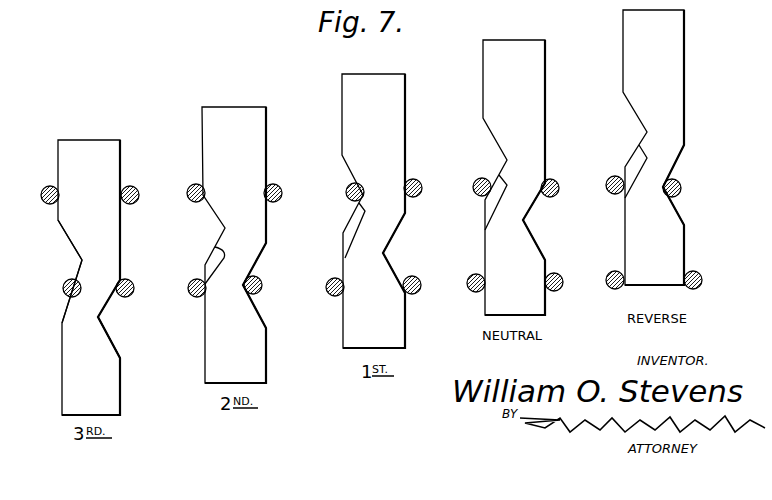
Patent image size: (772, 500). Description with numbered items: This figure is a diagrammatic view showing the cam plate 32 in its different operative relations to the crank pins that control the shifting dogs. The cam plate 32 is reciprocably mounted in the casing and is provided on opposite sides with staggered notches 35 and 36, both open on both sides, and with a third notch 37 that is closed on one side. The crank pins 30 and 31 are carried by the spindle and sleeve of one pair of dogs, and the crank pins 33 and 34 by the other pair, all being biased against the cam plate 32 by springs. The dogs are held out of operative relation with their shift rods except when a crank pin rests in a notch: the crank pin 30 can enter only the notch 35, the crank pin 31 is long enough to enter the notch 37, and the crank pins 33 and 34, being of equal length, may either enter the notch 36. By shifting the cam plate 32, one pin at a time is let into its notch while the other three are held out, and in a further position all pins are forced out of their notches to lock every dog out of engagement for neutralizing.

The crank pin 30 is at (44, 203).
The crank pin 31 is at (63, 288).
The cam plate 32 is at (68, 363).
The crank pin 33 is at (137, 187).
The crank pin 34 is at (133, 296).
The notch 35 is at (75, 252).
The notch 36 is at (108, 328).
The third notch 37 is at (68, 310).